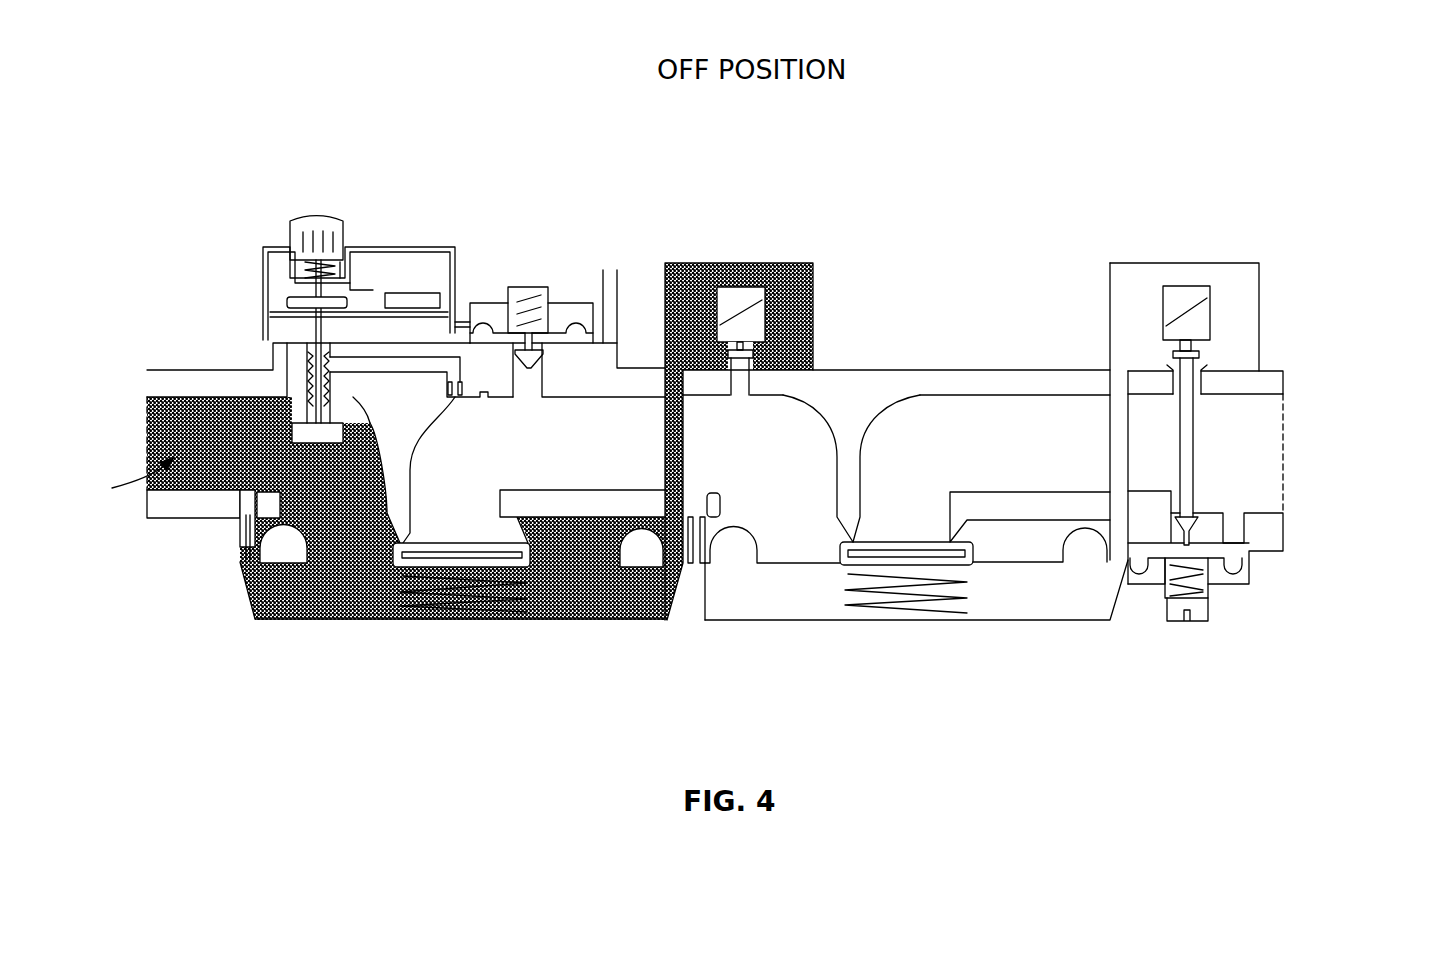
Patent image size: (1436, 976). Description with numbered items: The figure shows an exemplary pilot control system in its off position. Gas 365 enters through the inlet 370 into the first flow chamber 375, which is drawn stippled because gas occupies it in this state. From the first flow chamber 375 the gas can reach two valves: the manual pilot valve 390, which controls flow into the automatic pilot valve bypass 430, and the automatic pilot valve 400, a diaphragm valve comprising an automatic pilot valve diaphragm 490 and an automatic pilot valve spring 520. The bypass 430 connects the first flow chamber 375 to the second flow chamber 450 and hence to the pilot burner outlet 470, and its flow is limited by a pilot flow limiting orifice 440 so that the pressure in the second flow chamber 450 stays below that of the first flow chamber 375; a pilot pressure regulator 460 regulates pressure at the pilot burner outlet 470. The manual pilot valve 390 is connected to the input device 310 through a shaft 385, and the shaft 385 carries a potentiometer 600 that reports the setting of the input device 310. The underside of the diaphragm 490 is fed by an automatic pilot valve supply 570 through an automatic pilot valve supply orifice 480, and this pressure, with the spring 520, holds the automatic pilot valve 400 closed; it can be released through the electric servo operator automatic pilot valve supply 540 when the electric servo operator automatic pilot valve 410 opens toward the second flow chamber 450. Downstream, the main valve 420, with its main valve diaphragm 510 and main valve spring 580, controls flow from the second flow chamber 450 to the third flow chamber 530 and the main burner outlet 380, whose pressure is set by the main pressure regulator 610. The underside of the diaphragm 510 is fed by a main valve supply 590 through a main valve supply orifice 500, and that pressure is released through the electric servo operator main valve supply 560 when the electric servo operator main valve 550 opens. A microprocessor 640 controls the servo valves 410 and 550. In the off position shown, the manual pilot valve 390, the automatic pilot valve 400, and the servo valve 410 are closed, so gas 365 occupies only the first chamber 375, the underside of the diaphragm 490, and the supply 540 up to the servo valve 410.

The input device 310 is at (323, 237).
The shaft 385 is at (297, 287).
The potentiometer 600 is at (290, 303).
The microprocessor 640 is at (417, 292).
The automatic pilot valve bypass 430 is at (347, 357).
The pilot pressure regulator 460 is at (480, 310).
The pilot burner outlet 470 is at (604, 283).
The pilot flow limiting orifice 440 is at (458, 400).
The electric servo operator automatic pilot valve supply 540 is at (680, 292).
The electric servo operator automatic pilot valve 410 is at (744, 295).
The electric servo operator main valve 550 is at (1181, 293).
The electric servo operator main valve supply 560 is at (1122, 372).
The inlet 370 is at (145, 420).
The gas 365 is at (109, 472).
The manual pilot valve 390 is at (290, 437).
The first flow chamber 375 is at (352, 489).
The automatic pilot valve supply orifice 480 is at (238, 530).
The automatic pilot valve supply 570 is at (242, 565).
The second flow chamber 450 is at (625, 458).
The third flow chamber 530 is at (1020, 456).
The automatic pilot valve diaphragm 490 is at (322, 607).
The automatic pilot valve 400 is at (382, 607).
The automatic pilot valve spring 520 is at (498, 610).
The main valve spring 580 is at (935, 610).
The main valve supply 590 is at (677, 570).
The main valve supply orifice 500 is at (700, 567).
The main valve diaphragm 510 is at (777, 567).
The main valve 420 is at (970, 567).
The main pressure regulator 610 is at (1163, 568).
The main burner outlet 380 is at (1284, 498).